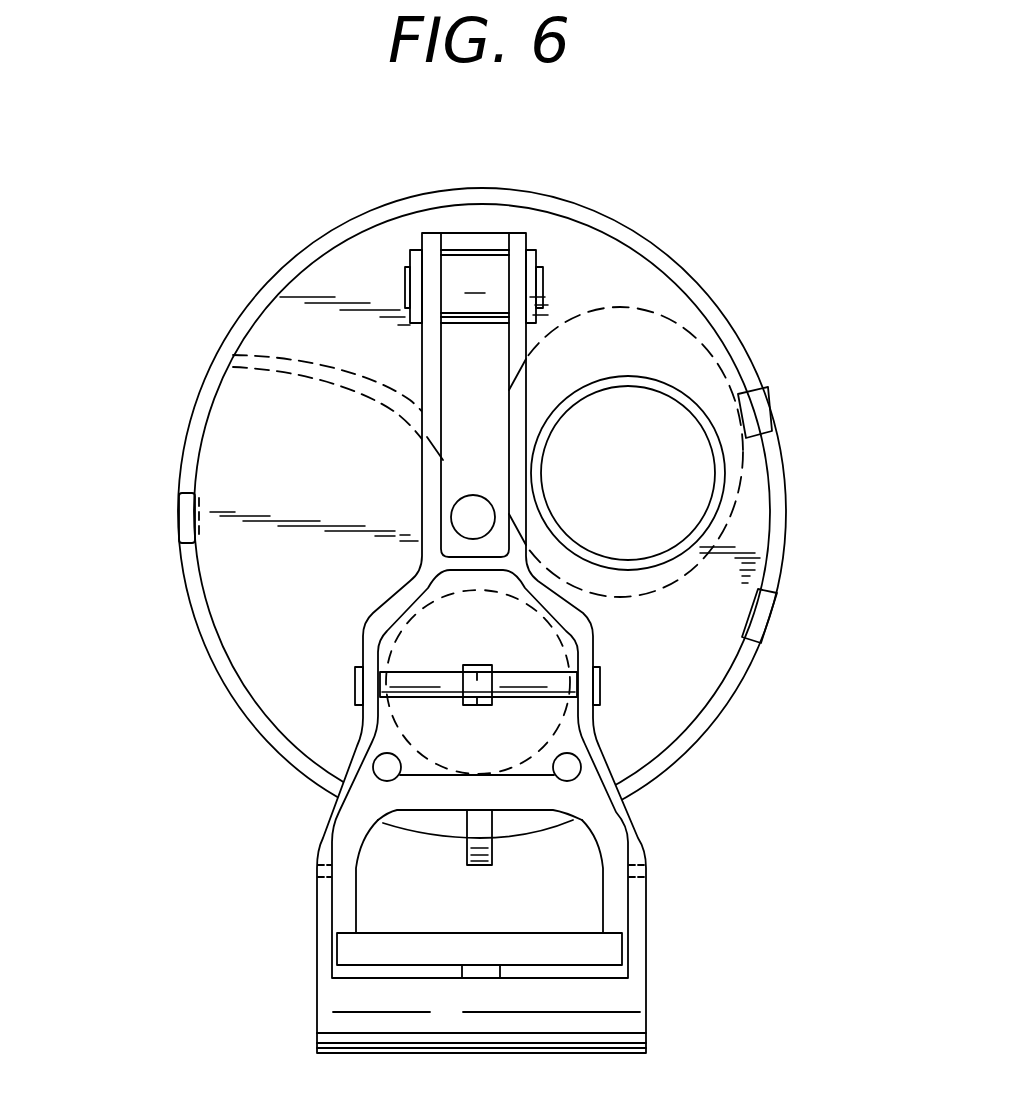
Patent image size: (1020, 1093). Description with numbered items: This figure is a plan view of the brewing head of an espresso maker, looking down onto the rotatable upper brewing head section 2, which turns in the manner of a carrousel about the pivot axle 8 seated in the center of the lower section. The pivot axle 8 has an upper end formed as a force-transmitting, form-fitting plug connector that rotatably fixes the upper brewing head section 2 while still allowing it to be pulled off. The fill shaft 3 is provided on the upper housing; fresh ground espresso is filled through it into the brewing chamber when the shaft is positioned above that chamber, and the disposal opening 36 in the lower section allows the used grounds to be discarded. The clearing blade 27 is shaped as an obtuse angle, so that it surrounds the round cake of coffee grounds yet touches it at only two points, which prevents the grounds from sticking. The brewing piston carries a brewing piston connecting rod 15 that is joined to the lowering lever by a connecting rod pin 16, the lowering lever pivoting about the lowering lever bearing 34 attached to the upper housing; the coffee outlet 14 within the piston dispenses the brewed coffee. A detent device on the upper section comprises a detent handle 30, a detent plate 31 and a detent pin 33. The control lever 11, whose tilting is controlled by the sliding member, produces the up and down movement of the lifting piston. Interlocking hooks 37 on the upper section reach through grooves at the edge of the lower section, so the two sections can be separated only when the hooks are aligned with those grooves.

The upper brewing head section 2 is at (650, 302).
The fill shaft 3 is at (710, 428).
The pivot axle 8 is at (468, 514).
The control lever 11 is at (583, 632).
The coffee outlet 14 is at (490, 858).
The brewing piston connecting rod 15 is at (478, 677).
The connecting rod pin 16 is at (547, 687).
The clearing blade 27 is at (322, 373).
The detent handle 30 is at (547, 952).
The detent plate 31 is at (367, 808).
The detent pin 33 is at (382, 772).
The lowering lever bearing 34 is at (533, 280).
The disposal opening 36 is at (638, 350).
The interlocking hooks 37 is at (185, 523).